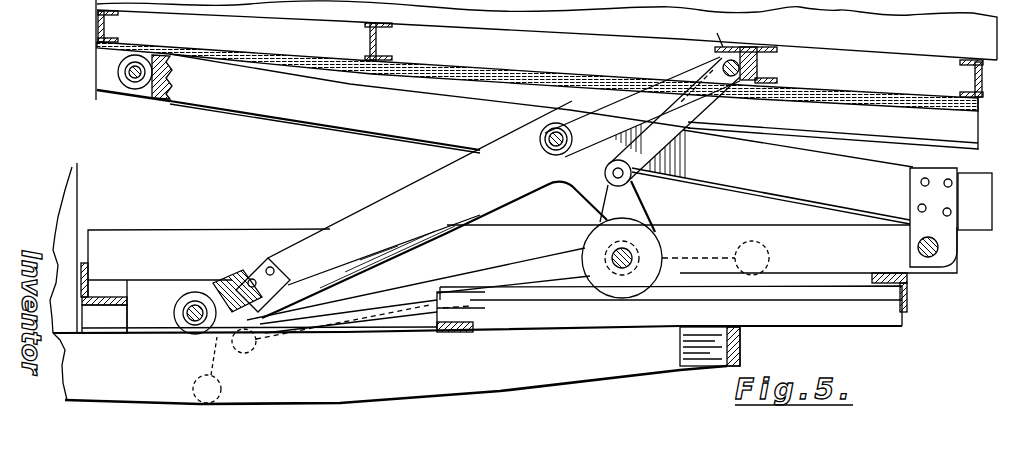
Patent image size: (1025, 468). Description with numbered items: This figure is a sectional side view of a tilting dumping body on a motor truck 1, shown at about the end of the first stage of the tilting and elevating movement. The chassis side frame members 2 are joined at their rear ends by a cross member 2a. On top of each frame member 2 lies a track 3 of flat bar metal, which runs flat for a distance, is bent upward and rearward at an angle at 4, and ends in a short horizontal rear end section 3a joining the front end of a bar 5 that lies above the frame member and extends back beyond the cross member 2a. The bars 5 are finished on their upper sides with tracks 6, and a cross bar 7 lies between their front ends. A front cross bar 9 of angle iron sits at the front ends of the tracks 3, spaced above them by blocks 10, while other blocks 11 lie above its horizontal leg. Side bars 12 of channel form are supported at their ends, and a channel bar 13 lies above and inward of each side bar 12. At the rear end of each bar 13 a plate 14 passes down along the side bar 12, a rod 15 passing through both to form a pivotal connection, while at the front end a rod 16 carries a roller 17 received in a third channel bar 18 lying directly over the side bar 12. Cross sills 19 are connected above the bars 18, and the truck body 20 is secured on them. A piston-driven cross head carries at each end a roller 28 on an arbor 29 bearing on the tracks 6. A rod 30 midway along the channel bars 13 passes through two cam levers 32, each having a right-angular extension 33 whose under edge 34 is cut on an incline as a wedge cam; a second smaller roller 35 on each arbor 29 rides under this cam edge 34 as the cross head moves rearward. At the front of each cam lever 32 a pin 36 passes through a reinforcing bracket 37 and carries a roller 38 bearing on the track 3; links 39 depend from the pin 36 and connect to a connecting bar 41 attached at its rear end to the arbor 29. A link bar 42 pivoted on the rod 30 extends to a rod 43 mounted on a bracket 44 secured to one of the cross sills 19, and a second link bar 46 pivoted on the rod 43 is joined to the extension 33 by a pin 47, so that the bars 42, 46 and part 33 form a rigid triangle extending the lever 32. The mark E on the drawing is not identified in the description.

The motor truck 1 is at (70, 209).
The chassis side frame member 2 is at (48, 392).
The cross member 2a is at (742, 350).
The track 3 is at (160, 336).
The short horizontal rear end section 3a is at (478, 312).
The inclined track portion 4 is at (407, 323).
The bar 5 is at (567, 323).
The track 6 is at (750, 292).
The cross bar 7 is at (452, 332).
The front cross bar 9 is at (82, 290).
The block 10 is at (110, 318).
The block 11 is at (106, 290).
The side bar 12 is at (232, 240).
The channel bar 13 is at (345, 120).
The plate 14 is at (913, 192).
The rod 15 is at (913, 247).
The rod or shaft 16 is at (134, 80).
The roller 17 is at (118, 82).
The third channel bar 18 is at (513, 90).
The cross sill 19 is at (103, 23).
The truck body 20 is at (280, 6).
The roller 28 is at (653, 245).
The arbor 29 is at (607, 251).
The rod 30 is at (554, 136).
The cam lever 32 is at (452, 177).
The right-angular extension 33 is at (636, 200).
The under side edge 34 is at (568, 190).
The second smaller roller 35 is at (752, 258).
The pin 36 is at (187, 300).
The reinforcing bracket 37 is at (251, 281).
The roller 38 is at (202, 296).
The link 39 is at (311, 354).
The connecting bar 41 is at (421, 293).
The link bar 42 is at (643, 90).
The rod 43 is at (741, 56).
The bracket 44 is at (708, 32).
The second link bar 46 is at (714, 112).
The pin 47 is at (640, 169).
The end bracket E is at (910, 288).